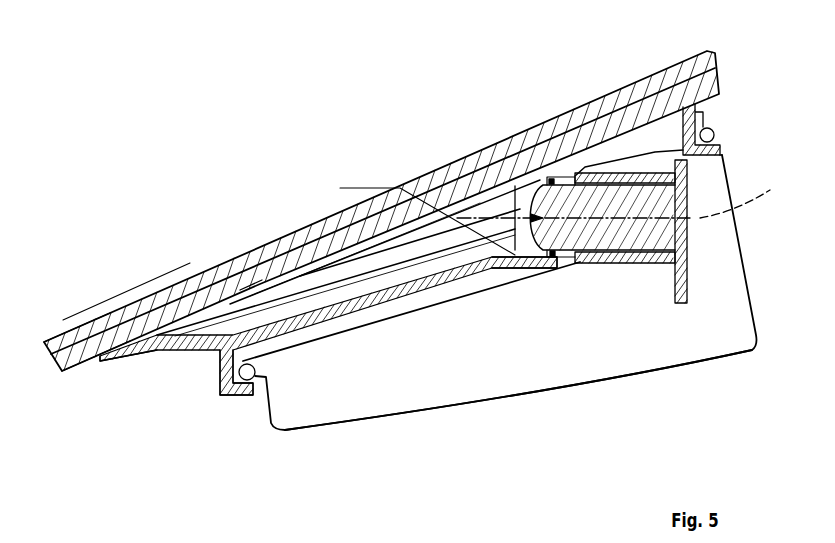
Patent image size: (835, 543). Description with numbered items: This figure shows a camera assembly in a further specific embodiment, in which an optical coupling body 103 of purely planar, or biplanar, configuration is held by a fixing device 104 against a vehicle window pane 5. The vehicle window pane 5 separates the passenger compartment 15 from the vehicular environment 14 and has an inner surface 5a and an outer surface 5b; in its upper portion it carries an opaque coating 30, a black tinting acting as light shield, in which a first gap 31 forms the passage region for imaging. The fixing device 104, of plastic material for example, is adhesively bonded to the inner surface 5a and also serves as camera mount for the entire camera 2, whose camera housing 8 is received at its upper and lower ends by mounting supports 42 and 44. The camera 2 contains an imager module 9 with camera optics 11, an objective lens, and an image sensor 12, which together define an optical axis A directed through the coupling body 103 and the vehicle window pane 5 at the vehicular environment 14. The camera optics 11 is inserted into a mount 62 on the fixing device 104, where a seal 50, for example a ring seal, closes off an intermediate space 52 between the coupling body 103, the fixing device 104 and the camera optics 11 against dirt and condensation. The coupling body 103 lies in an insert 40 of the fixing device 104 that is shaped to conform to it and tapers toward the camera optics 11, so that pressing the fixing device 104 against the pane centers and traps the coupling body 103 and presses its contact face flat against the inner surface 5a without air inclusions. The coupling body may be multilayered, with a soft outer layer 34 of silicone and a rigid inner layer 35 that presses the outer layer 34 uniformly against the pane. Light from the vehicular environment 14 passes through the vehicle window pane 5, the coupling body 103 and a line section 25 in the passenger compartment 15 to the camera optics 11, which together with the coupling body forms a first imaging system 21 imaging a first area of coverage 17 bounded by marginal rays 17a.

The vehicle window pane 5 is at (672, 78).
The inner surface of vehicle window pane 5a is at (80, 370).
The outer surface of vehicle window pane 5b is at (60, 334).
The opaque coating 30 is at (597, 107).
The first area of coverage 17 is at (195, 243).
The marginal rays 17a is at (462, 172).
The outer layer 34 is at (330, 243).
The optical coupling body 103 is at (297, 265).
The inner layer 35 is at (262, 280).
The first gap 31 is at (190, 305).
The fixing device 104 is at (160, 348).
The intermediate space 52 is at (213, 348).
The mounting support 42 is at (245, 381).
The first imaging system 21 is at (425, 250).
The line section 25 is at (466, 232).
The camera 2 is at (670, 358).
The camera housing 8 is at (372, 400).
The image sensor 12 is at (652, 198).
The imager module 9 is at (687, 275).
The seal 50 is at (551, 178).
The insert 40 is at (495, 182).
The optical axis A is at (623, 195).
The mounting support 44 is at (715, 130).
The camera optics 11 is at (683, 167).
The mount 62 is at (537, 270).
The vehicular environment 14 is at (287, 114).
The passenger compartment 15 is at (307, 503).